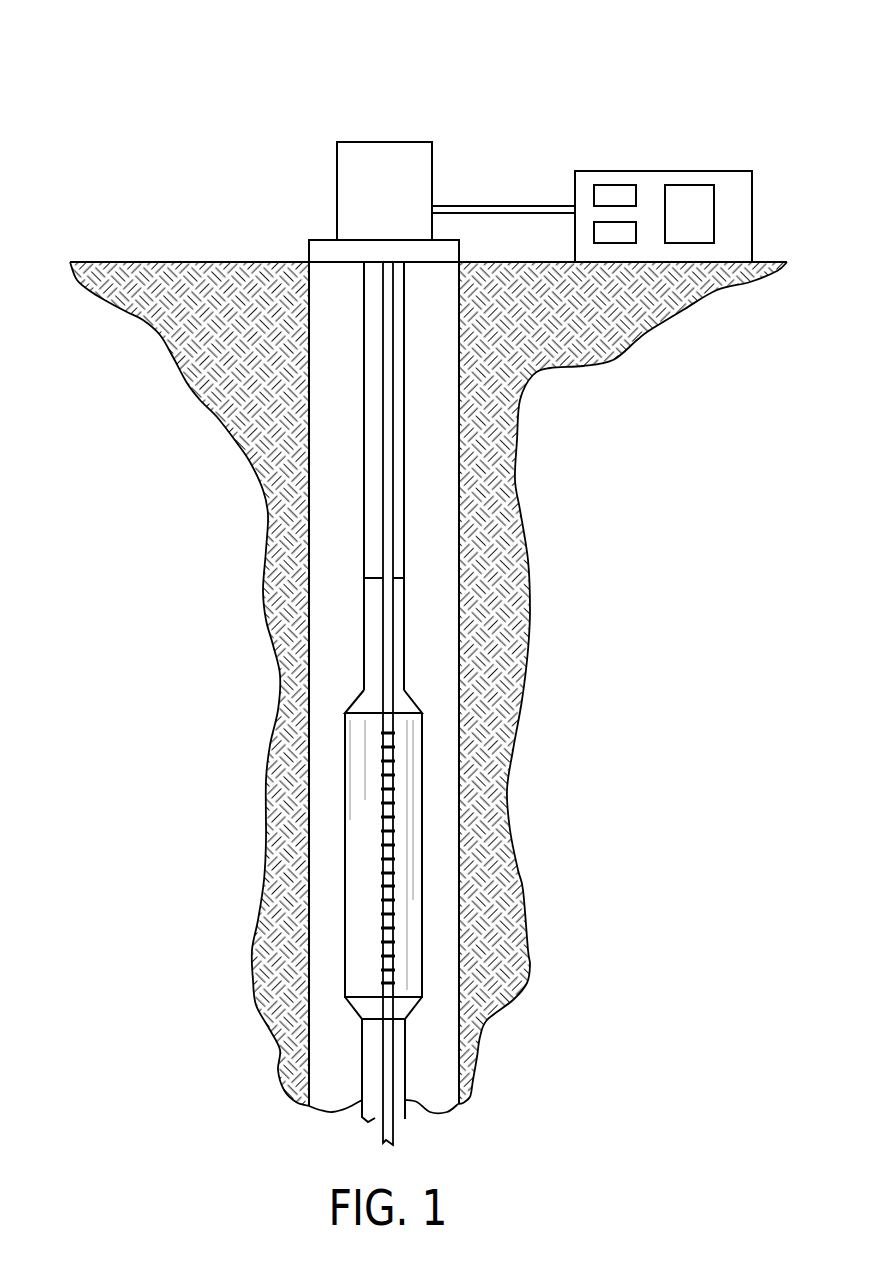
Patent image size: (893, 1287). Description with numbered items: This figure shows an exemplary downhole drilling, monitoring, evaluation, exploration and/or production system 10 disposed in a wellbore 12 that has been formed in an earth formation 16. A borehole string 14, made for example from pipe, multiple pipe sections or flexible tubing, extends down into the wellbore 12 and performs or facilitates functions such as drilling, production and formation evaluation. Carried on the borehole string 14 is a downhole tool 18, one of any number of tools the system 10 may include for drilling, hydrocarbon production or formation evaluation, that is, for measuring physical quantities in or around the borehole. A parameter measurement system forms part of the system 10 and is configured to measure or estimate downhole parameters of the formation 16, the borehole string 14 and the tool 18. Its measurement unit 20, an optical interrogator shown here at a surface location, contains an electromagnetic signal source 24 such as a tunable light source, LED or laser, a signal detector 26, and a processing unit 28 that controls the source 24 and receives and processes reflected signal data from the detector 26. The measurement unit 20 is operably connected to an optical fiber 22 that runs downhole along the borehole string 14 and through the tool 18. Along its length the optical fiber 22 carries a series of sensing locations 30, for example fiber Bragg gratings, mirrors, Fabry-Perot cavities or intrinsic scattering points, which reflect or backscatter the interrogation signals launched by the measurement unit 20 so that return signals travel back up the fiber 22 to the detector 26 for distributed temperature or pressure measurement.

The downhole drilling, monitoring, evaluation, exploration and/or production system 10 is at (411, 572).
The wellbore 12 is at (443, 558).
The borehole string 14 is at (403, 500).
The earth formation 16 is at (223, 381).
The downhole tool 18 is at (420, 918).
The measurement unit 20 is at (602, 164).
The optical fiber 22 is at (385, 612).
The electromagnetic signal source 24 is at (617, 188).
The signal detector 26 is at (605, 232).
The processing unit 28 is at (685, 195).
The sensing locations 30 is at (387, 832).